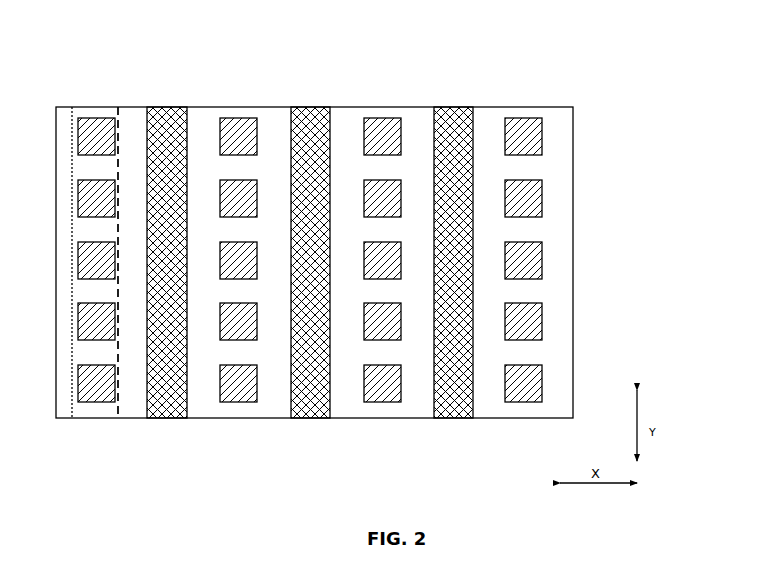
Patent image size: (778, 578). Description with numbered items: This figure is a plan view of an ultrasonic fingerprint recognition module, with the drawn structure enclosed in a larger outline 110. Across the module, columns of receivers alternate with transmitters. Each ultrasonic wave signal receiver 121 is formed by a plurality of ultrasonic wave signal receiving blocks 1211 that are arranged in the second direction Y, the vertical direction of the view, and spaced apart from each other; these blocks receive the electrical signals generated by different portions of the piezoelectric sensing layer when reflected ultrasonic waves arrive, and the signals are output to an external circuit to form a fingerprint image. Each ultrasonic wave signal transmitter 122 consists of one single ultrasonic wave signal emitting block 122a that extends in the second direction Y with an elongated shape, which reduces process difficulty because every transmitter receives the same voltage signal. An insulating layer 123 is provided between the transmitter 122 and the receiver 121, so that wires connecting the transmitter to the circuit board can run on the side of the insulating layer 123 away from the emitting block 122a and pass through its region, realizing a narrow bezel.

The substrate 110 is at (555, 127).
The ultrasonic wave signal receiver 121 is at (73, 106).
The ultrasonic wave signal receiving block 1211 is at (87, 131).
The ultrasonic wave signal transmitter 122 is at (188, 115).
The ultrasonic wave signal emitting block 122a is at (175, 125).
The insulating layer 123 is at (126, 400).